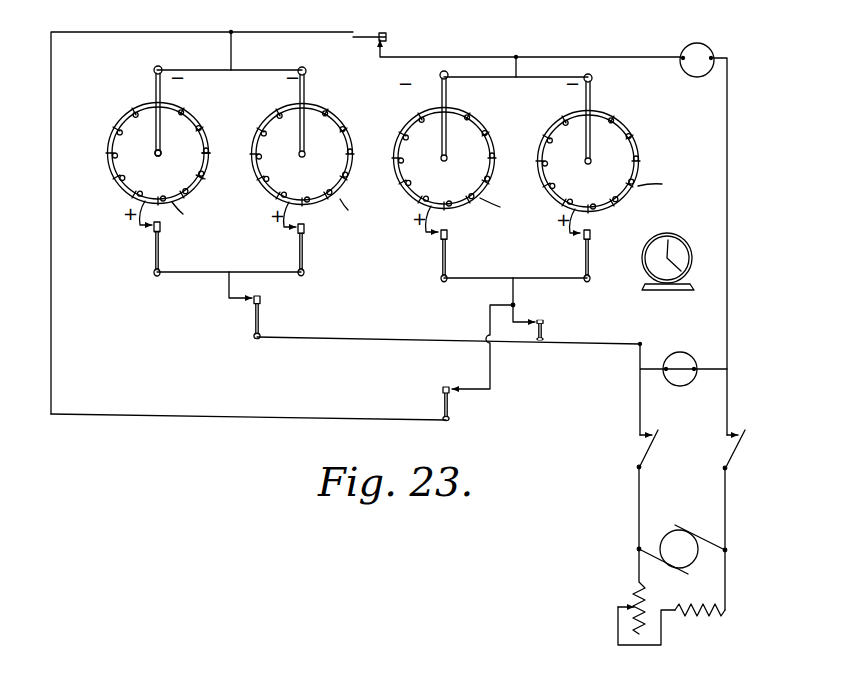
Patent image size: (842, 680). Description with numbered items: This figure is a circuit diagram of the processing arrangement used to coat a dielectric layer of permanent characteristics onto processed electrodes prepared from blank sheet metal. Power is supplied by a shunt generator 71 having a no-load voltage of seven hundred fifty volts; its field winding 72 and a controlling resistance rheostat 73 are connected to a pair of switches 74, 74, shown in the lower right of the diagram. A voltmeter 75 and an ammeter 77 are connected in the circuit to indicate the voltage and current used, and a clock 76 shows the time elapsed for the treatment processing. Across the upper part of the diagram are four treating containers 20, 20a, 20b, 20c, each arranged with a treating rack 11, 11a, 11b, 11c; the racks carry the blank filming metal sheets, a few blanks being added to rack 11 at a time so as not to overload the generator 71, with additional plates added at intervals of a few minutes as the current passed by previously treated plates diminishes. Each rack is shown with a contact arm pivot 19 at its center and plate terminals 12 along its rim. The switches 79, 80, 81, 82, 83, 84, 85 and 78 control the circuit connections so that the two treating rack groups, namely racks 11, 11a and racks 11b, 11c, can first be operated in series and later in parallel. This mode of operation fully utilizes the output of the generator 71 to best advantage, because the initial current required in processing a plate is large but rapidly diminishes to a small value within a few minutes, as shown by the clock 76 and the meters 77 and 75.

The treating rack 11 is at (130, 116).
The treating rack 11a is at (333, 116).
The treating rack 11b is at (475, 126).
The treating rack 11c is at (628, 126).
The contact arm pivot 19 is at (160, 151).
The plate terminals 12 is at (200, 178).
The treating container 20 is at (187, 216).
The treating container 20a is at (358, 212).
The treating container 20b is at (505, 211).
The treating container 20c is at (666, 184).
The switch 78 is at (372, 40).
The ammeter 77 is at (707, 50).
The clock 76 is at (678, 240).
The voltmeter 75 is at (680, 384).
The switches 74 is at (742, 455).
The shunt generator 71 is at (690, 536).
The controlling resistance rheostat 73 is at (630, 590).
The field winding 72 is at (702, 618).
The switch 79 is at (452, 410).
The switch 80 is at (262, 316).
The switch 81 is at (547, 334).
The switch 82 is at (163, 242).
The switch 83 is at (306, 250).
The switch 84 is at (450, 246).
The switch 85 is at (592, 250).